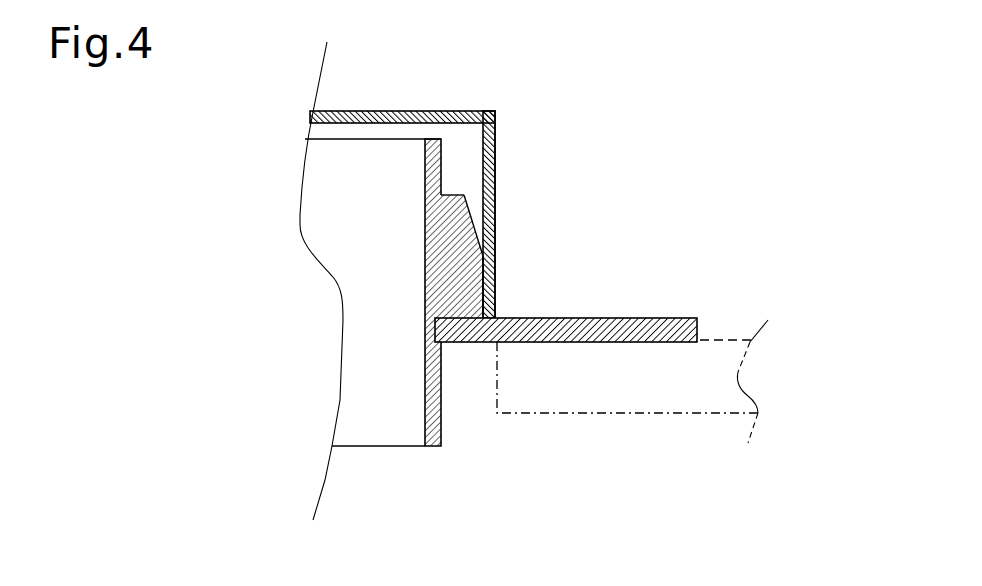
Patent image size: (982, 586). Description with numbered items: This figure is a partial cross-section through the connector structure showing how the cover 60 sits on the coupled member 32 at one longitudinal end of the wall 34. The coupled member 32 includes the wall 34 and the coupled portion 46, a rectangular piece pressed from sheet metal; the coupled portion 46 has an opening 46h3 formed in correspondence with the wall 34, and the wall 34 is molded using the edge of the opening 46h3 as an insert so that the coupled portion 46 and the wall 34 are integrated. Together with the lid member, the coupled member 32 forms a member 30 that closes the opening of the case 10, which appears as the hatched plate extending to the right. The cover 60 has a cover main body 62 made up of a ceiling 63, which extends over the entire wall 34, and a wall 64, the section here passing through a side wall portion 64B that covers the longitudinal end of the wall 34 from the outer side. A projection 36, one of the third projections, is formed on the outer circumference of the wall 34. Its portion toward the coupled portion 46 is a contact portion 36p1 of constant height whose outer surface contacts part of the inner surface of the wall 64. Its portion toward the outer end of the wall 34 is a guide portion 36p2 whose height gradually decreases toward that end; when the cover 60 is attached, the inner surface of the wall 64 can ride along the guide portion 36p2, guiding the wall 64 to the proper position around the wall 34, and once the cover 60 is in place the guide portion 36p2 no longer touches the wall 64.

The case 10 is at (731, 342).
The member 30 is at (398, 139).
The coupled member 32 is at (407, 340).
The wall 34 is at (408, 448).
The projection 36 is at (539, 234).
The contact portion 36p1 is at (483, 282).
The guide portion 36p2 is at (472, 222).
The coupled portion 46 is at (405, 320).
The opening 46h3 is at (434, 332).
The cover 60 is at (446, 174).
The cover main body 62 is at (443, 109).
The ceiling 63 is at (485, 109).
The wall 64 is at (495, 135).
The side wall portion 64B is at (495, 248).